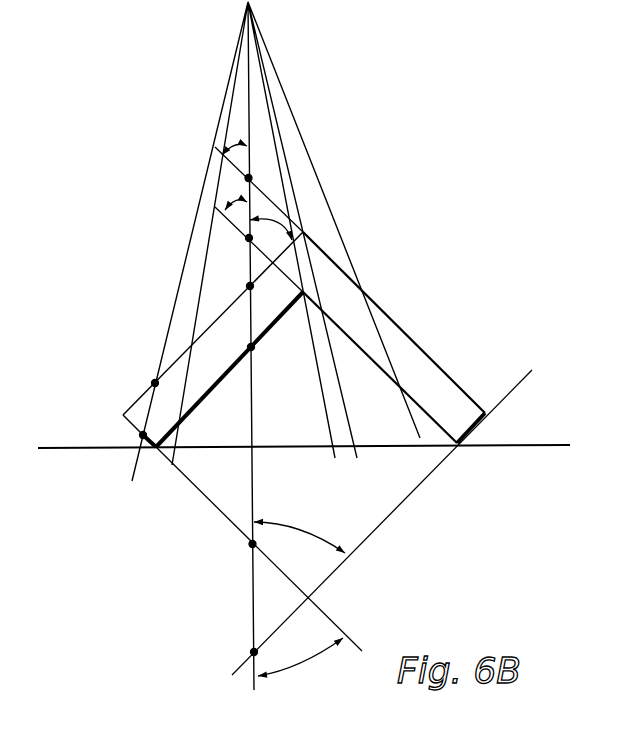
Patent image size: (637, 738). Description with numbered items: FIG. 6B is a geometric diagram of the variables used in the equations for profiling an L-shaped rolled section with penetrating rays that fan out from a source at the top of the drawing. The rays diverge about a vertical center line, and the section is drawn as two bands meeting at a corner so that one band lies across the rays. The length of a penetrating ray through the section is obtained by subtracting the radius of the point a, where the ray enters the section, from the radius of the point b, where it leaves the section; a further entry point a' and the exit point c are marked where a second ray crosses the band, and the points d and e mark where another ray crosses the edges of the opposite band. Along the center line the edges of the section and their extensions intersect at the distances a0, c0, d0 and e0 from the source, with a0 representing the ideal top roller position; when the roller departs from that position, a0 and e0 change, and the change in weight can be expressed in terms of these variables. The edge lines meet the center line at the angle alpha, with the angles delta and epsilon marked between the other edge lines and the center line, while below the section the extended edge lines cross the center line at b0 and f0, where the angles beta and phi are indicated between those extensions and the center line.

The point at which the penetrating ray enters the rolled section a is at (162, 385).
The point a' on upper edge of left band a' is at (196, 351).
The distance from source along vertical center line a0 is at (262, 289).
The point at which the penetrating ray leaves the rolled section b is at (151, 428).
The point b0 on optical axis b0 is at (242, 551).
The point c on lower edge of left band c is at (180, 429).
The point c0 on optical axis c0 is at (263, 353).
The point d on lower edge of right band d is at (336, 325).
The point d0 on optical axis d0 is at (238, 253).
The point e on upper edge of right band e is at (350, 280).
The variable e_o e0 is at (259, 175).
The point f0 on optical axis f0 is at (241, 647).
The angle at which the line intersects the vertical center line alpha is at (271, 228).
The angle beta is at (299, 532).
The angle delta is at (235, 199).
The angle epsilon is at (234, 142).
The angle phi is at (300, 666).